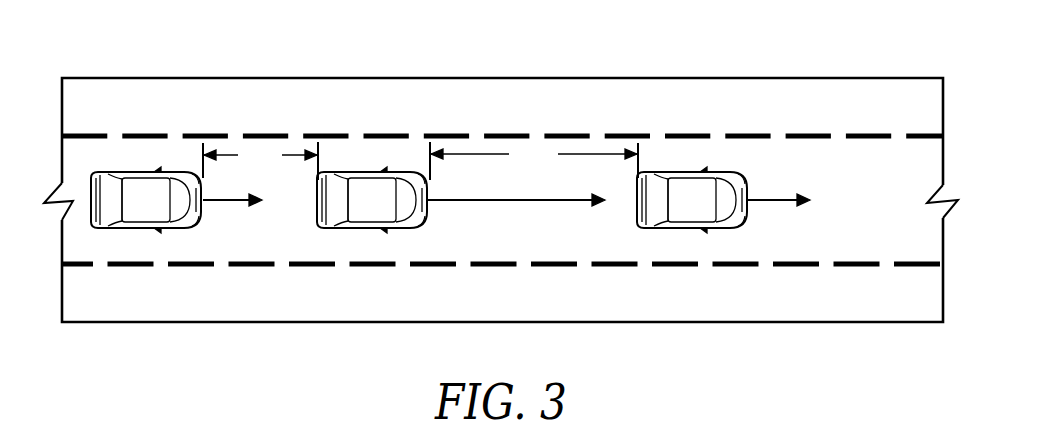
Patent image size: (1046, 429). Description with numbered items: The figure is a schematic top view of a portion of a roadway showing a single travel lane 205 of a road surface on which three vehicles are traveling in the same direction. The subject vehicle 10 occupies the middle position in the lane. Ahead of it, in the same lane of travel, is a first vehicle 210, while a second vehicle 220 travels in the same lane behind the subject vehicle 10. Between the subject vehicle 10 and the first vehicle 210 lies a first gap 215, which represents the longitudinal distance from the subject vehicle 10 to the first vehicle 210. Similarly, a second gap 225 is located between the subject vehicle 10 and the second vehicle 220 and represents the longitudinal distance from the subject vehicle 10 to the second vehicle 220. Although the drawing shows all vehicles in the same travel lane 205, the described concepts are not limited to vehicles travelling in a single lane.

The subject vehicle 10 is at (359, 212).
The travel lane 205 is at (826, 218).
The first vehicle 210 is at (671, 212).
The first gap 215 is at (513, 167).
The second vehicle 220 is at (125, 212).
The second gap 225 is at (239, 168).